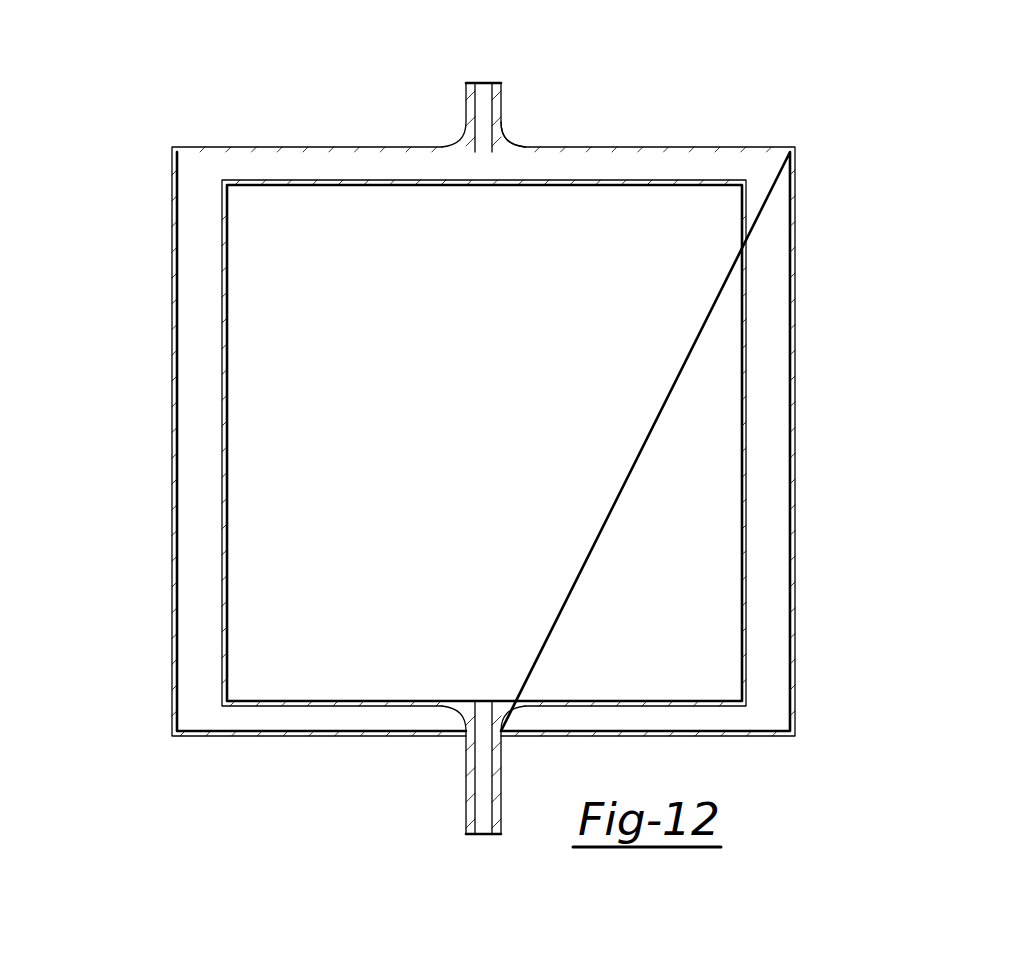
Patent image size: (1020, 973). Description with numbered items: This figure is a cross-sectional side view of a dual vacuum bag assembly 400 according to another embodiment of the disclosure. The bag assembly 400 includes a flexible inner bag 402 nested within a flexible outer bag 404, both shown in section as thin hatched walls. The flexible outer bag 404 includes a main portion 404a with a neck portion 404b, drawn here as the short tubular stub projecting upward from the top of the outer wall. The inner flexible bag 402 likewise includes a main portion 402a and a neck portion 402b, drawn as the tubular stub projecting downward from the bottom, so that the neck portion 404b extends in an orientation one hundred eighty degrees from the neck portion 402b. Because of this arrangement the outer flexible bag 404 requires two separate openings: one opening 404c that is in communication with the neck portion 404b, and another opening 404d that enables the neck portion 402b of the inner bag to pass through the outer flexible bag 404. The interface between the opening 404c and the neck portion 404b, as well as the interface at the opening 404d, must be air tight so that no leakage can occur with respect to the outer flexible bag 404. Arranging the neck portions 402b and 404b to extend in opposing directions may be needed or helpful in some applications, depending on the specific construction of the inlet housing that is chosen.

The dual vacuum bag assembly 400 is at (758, 94).
The flexible inner bag 402 is at (210, 347).
The main portion 402a is at (278, 678).
The neck portion 402b is at (473, 790).
The flexible outer bag 404 is at (160, 240).
The main portion 404a is at (654, 168).
The neck portion 404b is at (472, 98).
The opening 404c is at (499, 153).
The opening 404d is at (508, 700).